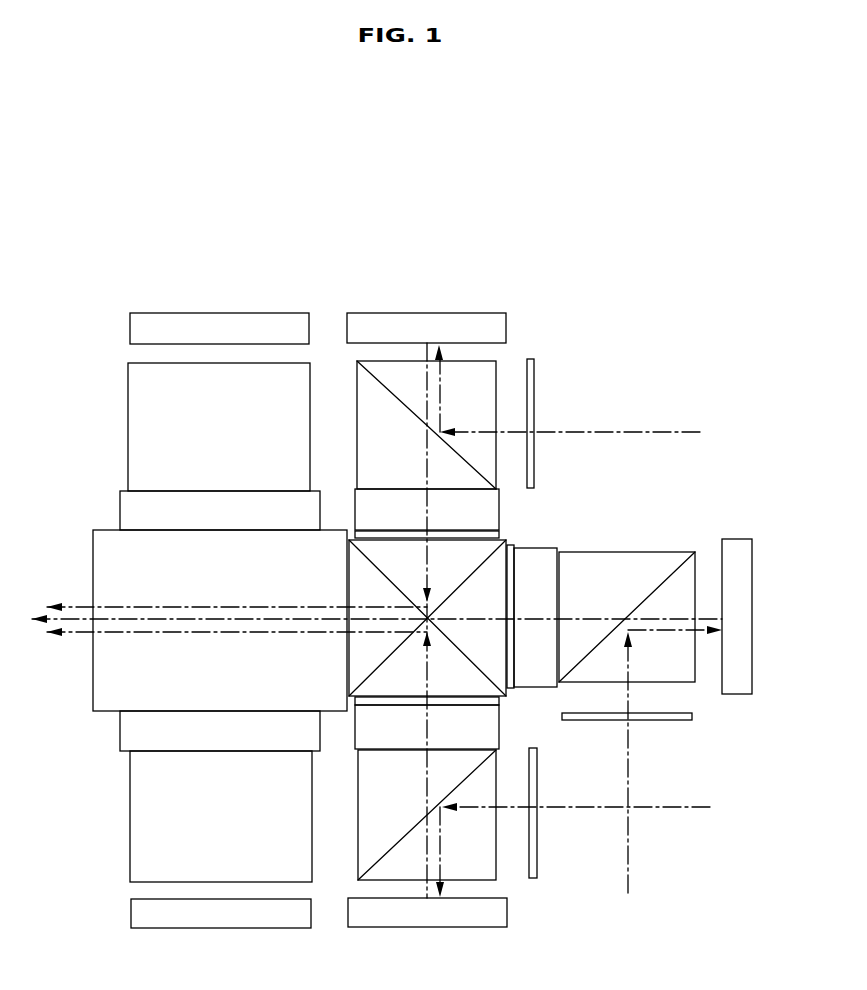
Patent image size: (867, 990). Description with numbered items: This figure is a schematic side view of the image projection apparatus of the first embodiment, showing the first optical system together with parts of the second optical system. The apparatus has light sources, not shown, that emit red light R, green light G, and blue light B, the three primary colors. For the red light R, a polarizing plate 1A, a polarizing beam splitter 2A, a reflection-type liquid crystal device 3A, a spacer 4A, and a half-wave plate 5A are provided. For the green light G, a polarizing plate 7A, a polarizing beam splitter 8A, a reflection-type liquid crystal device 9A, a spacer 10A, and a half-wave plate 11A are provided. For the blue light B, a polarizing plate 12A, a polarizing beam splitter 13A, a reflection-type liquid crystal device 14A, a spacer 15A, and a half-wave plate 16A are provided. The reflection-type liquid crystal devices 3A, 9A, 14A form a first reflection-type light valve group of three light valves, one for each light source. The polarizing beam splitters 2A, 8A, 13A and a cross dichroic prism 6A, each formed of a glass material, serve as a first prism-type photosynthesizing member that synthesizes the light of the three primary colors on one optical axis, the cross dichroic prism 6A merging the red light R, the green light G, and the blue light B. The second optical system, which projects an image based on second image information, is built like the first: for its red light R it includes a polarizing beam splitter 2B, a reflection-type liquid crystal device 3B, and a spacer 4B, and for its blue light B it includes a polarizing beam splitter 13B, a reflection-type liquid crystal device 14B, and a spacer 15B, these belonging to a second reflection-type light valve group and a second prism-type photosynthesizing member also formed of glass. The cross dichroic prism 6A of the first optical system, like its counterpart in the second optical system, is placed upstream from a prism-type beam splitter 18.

The polarizing plate 1A is at (535, 368).
The polarizing beam splitter 2A is at (490, 361).
The reflection-type liquid crystal device 3A is at (457, 313).
The spacer 4A is at (499, 498).
The half-wave plate 5A is at (500, 536).
The cross dichroic prism 6A is at (511, 545).
The polarizing plate 7A is at (686, 721).
The polarizing beam splitter 8A is at (696, 683).
The reflection-type liquid crystal device 9A is at (740, 539).
The spacer 10A is at (560, 552).
The half-wave plate 11A is at (530, 548).
The polarizing plate 12A is at (537, 838).
The polarizing beam splitter 13A is at (497, 868).
The reflection-type liquid crystal device 14A is at (452, 928).
The spacer 15A is at (355, 730).
The half-wave plate 16A is at (508, 698).
The polarizing beam splitter 2B is at (128, 420).
The reflection-type liquid crystal device 3B is at (154, 312).
The spacer 4B is at (120, 508).
The polarizing beam splitter 13B is at (130, 856).
The reflection-type liquid crystal device 14B is at (226, 929).
The spacer 15B is at (120, 730).
The prism-type beam splitter 18 is at (93, 664).
The red light R is at (598, 432).
The green light G is at (629, 845).
The blue light B is at (686, 807).